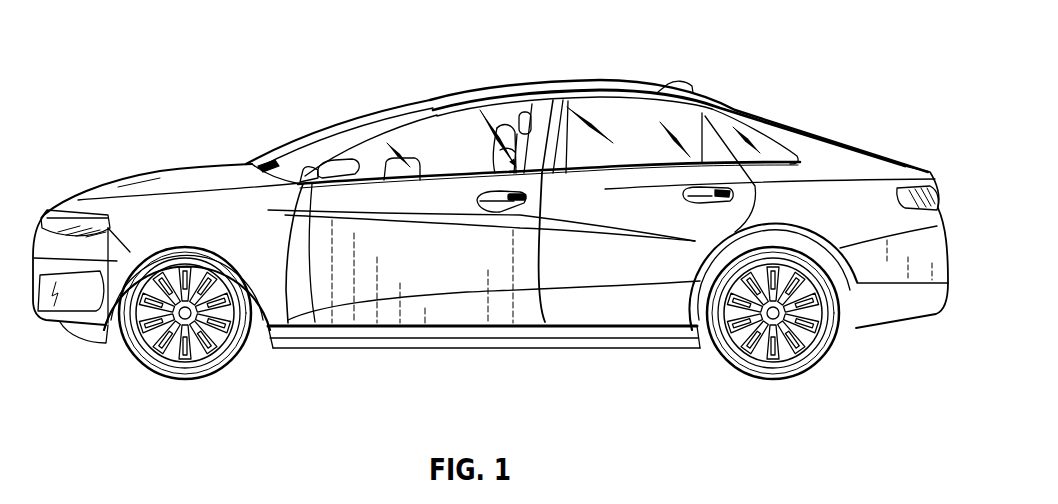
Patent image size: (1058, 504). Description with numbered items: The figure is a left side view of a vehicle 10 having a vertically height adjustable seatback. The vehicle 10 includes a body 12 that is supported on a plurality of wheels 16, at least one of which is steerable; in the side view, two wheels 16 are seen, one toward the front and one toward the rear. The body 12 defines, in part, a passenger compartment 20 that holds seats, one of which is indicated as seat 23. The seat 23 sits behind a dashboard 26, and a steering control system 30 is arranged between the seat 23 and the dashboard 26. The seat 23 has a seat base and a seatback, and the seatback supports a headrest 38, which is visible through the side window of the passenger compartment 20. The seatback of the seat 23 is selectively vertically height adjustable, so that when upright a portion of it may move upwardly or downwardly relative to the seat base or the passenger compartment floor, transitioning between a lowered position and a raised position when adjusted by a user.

The vehicle 10 is at (312, 134).
The body 12 is at (553, 83).
The wheels 16 is at (210, 374).
The passenger compartment 20 is at (462, 135).
The seat 23 is at (543, 174).
The dashboard 26 is at (373, 155).
The steering control system 30 is at (410, 135).
The headrest 38 is at (502, 127).